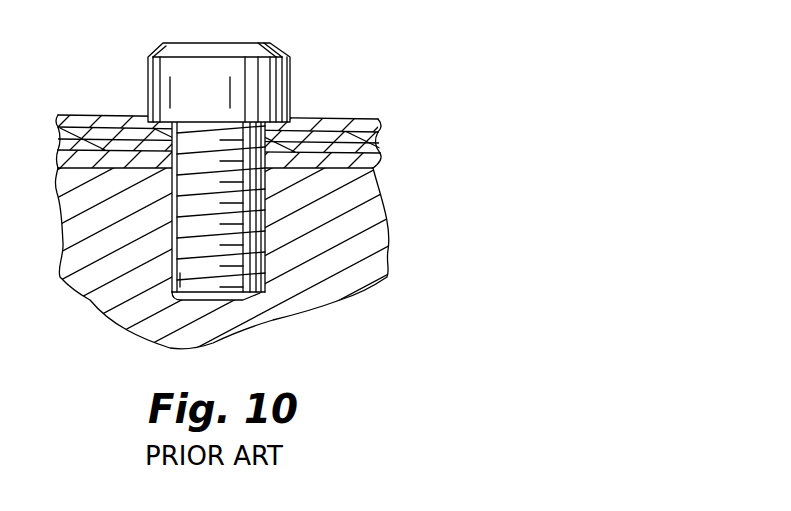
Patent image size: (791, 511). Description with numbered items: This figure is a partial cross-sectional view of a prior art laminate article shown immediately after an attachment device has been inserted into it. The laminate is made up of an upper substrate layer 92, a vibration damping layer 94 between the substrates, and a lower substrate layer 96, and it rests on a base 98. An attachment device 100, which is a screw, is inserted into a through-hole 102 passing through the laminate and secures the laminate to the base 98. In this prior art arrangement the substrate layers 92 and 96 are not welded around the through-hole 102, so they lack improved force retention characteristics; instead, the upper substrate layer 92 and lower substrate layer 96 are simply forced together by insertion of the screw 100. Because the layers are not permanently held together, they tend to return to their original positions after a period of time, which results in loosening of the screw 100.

The upper substrate layer 92 is at (348, 125).
The vibration damping layer 94 is at (383, 141).
The lower substrate layer 96 is at (378, 153).
The base 98 is at (366, 223).
The attachment device 100 is at (283, 52).
The through-hole 102 is at (173, 255).